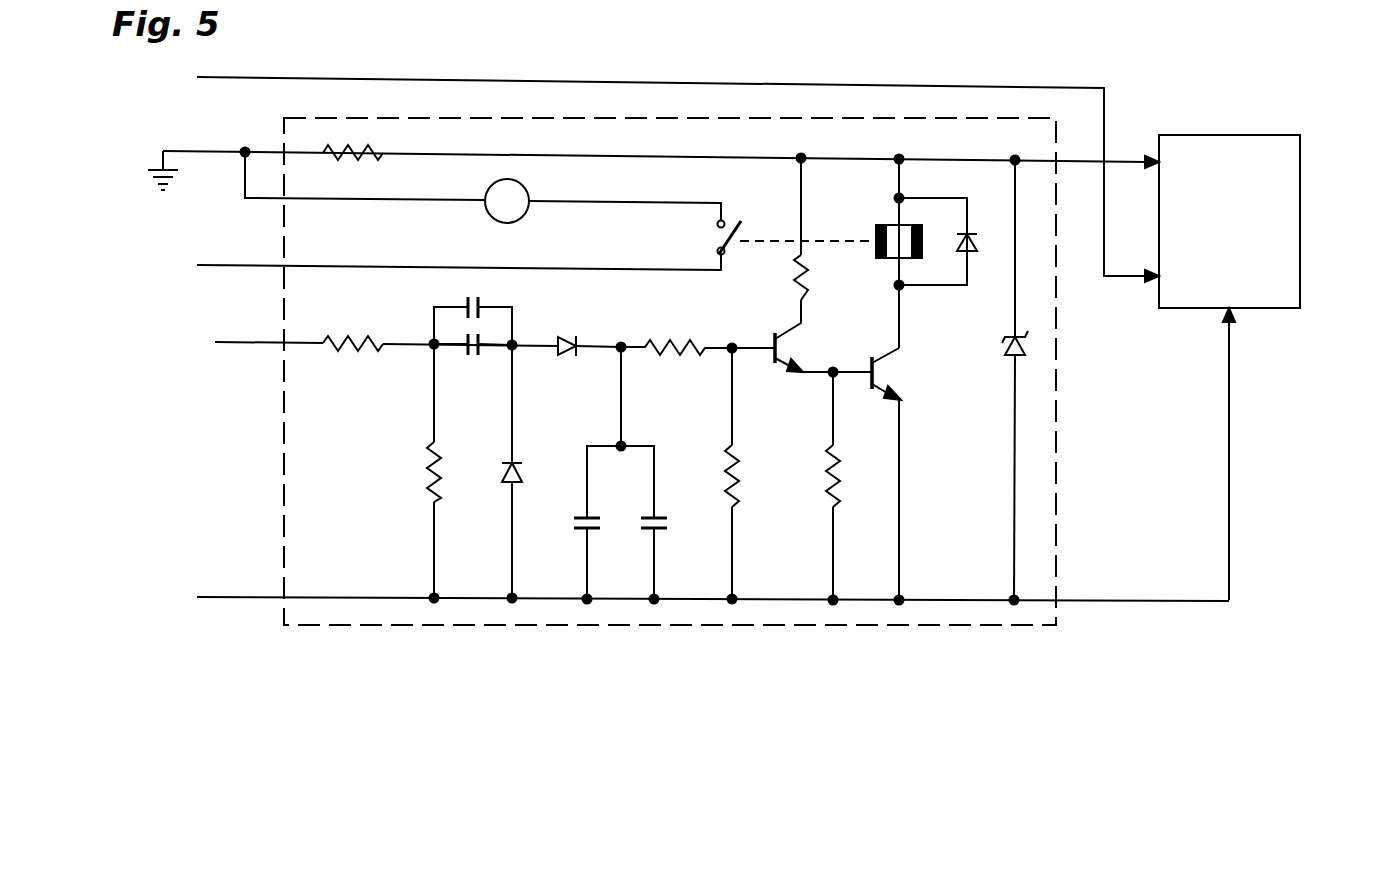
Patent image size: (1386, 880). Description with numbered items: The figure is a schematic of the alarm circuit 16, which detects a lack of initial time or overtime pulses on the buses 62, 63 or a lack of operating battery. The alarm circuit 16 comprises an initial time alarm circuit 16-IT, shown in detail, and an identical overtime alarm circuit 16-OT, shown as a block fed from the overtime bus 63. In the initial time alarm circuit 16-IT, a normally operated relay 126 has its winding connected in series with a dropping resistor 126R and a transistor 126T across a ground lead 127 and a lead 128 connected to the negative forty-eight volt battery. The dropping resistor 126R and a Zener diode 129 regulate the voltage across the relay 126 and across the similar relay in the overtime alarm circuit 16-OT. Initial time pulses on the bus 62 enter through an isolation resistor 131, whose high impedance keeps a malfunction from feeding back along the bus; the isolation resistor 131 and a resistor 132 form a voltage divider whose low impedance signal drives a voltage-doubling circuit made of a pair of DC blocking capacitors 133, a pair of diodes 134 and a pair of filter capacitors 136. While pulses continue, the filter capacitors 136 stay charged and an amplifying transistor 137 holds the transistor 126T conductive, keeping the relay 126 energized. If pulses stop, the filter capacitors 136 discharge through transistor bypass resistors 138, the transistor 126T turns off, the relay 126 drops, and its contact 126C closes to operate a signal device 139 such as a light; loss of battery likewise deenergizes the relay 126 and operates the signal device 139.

The overtime bus 63 is at (350, 77).
The ground lead 127 is at (215, 150).
The dropping resistor 126R is at (338, 148).
The signal device 139 is at (522, 220).
The contact 126C is at (720, 240).
The relay 126 is at (888, 226).
The amplifying transistor 137 is at (783, 339).
The transistor 126T is at (885, 372).
The Zener diode 129 is at (1012, 358).
The overtime alarm circuit 16-OT is at (1365, 357).
The initial time bus 62 is at (263, 345).
The isolation resistor 131 is at (366, 352).
The DC blocking capacitors 133 is at (466, 340).
The diodes 134 is at (522, 474).
The resistor 132 is at (426, 467).
The filter capacitors 136 is at (648, 517).
The transistor bypass resistors 138 is at (829, 467).
The lead 128 is at (258, 600).
The initial time alarm circuit 16-IT is at (440, 632).
The alarm circuit 16 is at (908, 655).